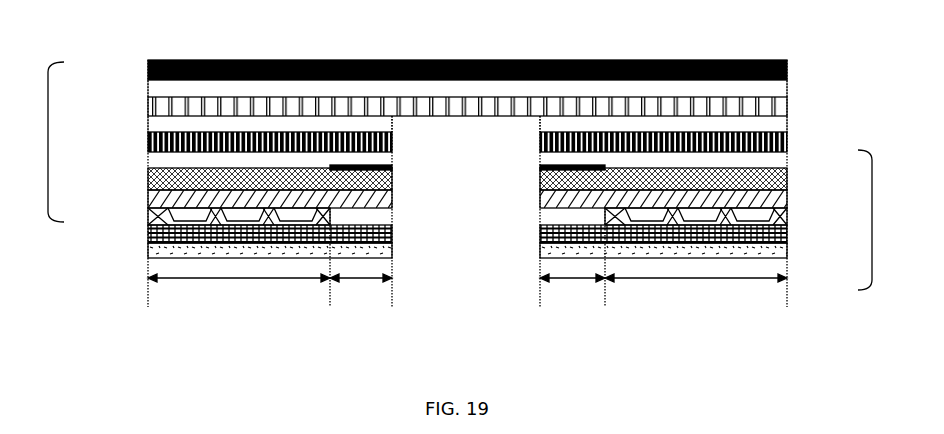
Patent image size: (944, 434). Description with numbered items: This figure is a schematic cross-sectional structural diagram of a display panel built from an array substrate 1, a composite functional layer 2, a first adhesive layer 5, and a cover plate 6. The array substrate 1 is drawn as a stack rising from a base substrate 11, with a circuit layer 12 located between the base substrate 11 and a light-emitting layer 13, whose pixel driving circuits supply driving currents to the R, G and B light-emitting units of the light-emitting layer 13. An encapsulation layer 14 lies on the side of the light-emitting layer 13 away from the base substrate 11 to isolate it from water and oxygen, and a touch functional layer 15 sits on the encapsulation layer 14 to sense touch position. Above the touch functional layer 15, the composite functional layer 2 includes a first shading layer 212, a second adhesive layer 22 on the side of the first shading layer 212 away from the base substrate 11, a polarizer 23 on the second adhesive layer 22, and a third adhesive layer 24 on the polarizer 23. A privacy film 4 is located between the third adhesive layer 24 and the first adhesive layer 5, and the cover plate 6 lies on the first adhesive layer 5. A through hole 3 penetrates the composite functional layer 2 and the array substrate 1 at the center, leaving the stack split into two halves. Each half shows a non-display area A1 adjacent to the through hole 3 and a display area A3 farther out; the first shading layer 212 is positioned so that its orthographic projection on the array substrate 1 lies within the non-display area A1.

The array substrate 1 is at (523, 224).
The base substrate 11 is at (783, 258).
The circuit layer 12 is at (778, 237).
The light-emitting layer 13 is at (778, 216).
The encapsulation layer 14 is at (778, 197).
The touch functional layer 15 is at (778, 178).
The composite functional layer 2 is at (404, 143).
The first shading layer 212 is at (333, 168).
The second adhesive layer 22 is at (148, 165).
The polarizer 23 is at (148, 148).
The third adhesive layer 24 is at (148, 123).
The first adhesive layer 5 is at (148, 87).
The privacy film 4 is at (782, 108).
The cover plate 6 is at (578, 60).
The through hole 3 is at (448, 228).
The non-display area A1 is at (467, 292).
The display area A3 is at (467, 292).